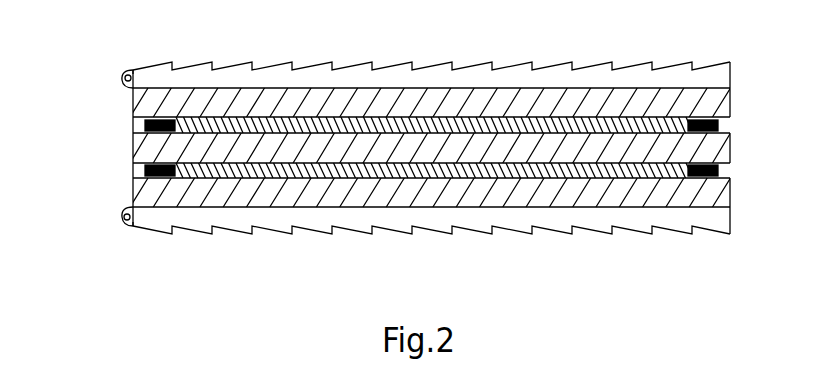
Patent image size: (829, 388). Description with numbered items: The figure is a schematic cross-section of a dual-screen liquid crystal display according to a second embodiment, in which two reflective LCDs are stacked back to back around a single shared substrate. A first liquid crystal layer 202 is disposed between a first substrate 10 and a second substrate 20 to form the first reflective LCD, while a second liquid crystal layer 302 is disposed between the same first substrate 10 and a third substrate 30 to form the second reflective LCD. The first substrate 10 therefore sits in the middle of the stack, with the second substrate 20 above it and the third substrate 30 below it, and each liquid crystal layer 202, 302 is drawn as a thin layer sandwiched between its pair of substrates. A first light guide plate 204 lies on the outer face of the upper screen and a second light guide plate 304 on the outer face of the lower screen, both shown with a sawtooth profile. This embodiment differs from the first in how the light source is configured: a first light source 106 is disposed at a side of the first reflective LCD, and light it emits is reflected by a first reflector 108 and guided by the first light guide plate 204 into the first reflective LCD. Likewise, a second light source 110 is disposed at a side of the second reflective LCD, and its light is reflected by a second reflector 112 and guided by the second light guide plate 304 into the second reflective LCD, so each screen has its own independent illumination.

The first substrate 10 is at (731, 149).
The second substrate 20 is at (731, 103).
The third substrate 30 is at (731, 192).
The first liquid crystal layer 202 is at (472, 118).
The first light guide plate 204 is at (346, 68).
The second liquid crystal layer 302 is at (531, 168).
The second light guide plate 304 is at (425, 229).
The first light source 106 is at (134, 70).
The first reflector 108 is at (125, 75).
The second light source 110 is at (134, 228).
The second reflector 112 is at (121, 213).